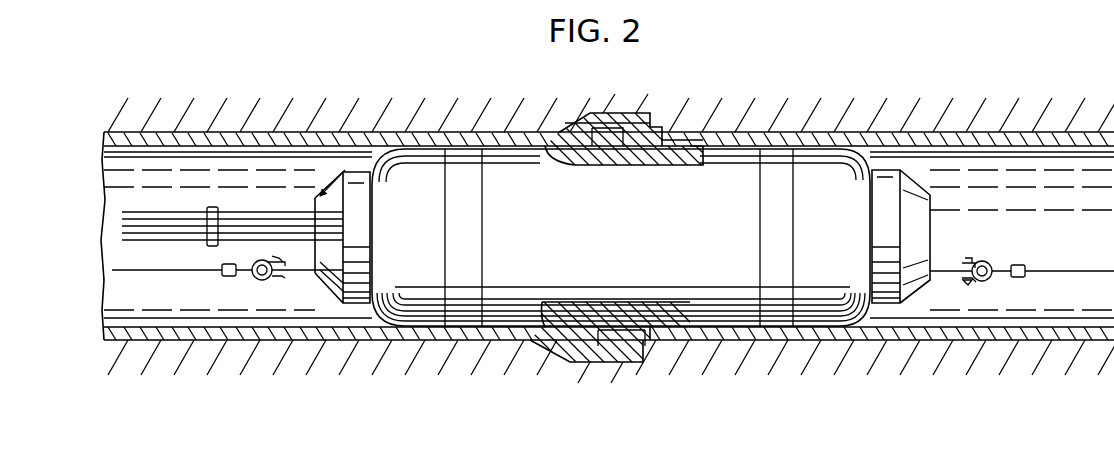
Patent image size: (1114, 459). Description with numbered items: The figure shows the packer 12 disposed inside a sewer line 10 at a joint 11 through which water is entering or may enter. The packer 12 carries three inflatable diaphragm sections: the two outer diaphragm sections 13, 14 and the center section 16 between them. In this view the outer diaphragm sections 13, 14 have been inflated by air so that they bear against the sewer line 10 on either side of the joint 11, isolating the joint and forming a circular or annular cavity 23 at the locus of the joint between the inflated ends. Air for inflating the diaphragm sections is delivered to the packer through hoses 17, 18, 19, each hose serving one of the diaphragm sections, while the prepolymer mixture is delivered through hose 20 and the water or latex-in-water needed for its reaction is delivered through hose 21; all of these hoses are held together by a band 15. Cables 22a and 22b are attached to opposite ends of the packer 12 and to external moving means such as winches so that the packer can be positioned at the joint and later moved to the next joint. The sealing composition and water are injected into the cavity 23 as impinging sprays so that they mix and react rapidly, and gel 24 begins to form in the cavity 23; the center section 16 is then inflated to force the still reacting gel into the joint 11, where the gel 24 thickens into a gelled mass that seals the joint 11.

The sewer line 10 is at (566, 120).
The joint 11 is at (663, 126).
The packer 12 is at (516, 303).
The outer diaphragm section 13 is at (428, 150).
The outer diaphragm section 14 is at (852, 134).
The band 15 is at (214, 205).
The center diaphragm section 16 is at (580, 238).
The hose 17 is at (192, 240).
The hose 18 is at (121, 221).
The hose 19 is at (121, 223).
The hose 20 is at (121, 232).
The hose 21 is at (121, 241).
The cable 22a is at (162, 280).
The cable 22b is at (1066, 265).
The annular cavity 23 is at (703, 145).
The gel 24 is at (662, 162).